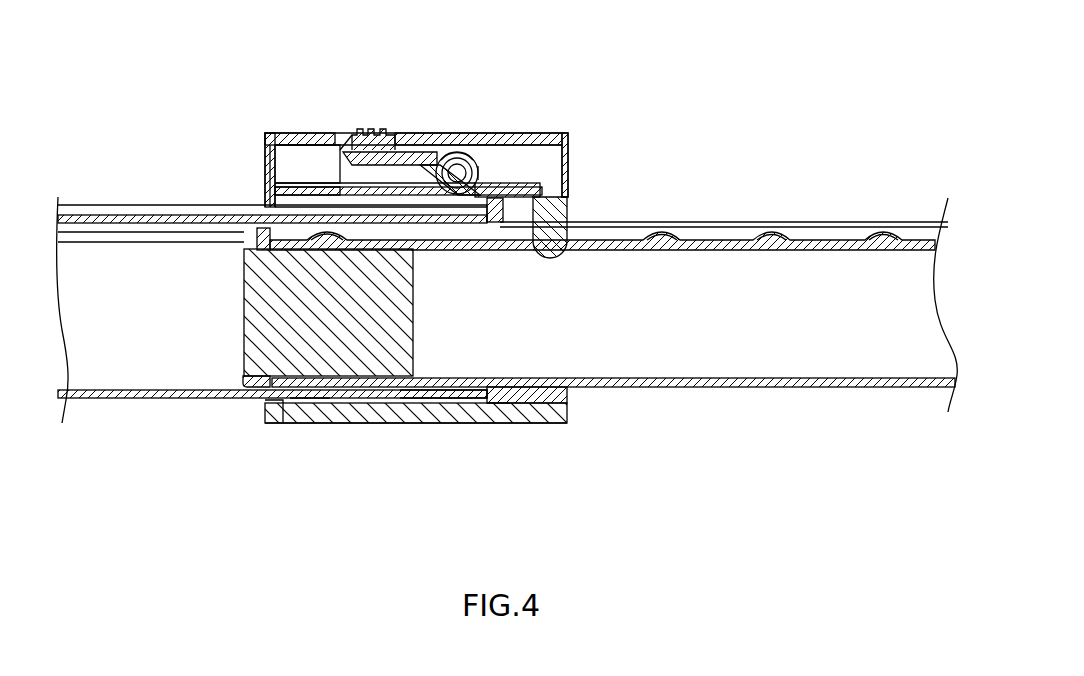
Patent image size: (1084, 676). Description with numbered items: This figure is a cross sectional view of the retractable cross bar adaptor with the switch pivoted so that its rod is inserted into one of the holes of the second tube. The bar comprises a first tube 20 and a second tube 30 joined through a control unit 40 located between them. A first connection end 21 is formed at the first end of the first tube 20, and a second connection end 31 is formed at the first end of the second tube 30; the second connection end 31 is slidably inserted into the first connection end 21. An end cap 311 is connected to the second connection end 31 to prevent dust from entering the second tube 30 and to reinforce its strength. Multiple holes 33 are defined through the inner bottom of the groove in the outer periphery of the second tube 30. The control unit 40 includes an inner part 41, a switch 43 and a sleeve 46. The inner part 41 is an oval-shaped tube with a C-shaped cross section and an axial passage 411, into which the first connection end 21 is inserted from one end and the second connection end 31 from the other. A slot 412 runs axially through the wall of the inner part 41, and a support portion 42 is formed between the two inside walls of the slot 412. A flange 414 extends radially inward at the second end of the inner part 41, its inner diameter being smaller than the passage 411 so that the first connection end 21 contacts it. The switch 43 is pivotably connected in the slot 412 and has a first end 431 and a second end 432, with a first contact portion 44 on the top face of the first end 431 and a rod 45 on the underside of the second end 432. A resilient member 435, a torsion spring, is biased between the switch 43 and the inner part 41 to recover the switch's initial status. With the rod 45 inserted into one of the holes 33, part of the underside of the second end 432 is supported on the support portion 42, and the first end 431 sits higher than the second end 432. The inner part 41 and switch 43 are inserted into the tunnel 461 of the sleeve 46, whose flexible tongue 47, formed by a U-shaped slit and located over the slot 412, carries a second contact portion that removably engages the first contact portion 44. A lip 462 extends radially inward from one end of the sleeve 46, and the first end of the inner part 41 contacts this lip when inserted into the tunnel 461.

The first tube 20 is at (110, 393).
The first connection end 21 is at (453, 403).
The second tube 30 is at (717, 233).
The second connection end 31 is at (340, 380).
The end cap 311 is at (255, 302).
The holes 33 is at (658, 240).
The control unit 40 is at (435, 124).
The inner part 41 is at (424, 400).
The passage 411 is at (307, 393).
The slot 412 is at (305, 170).
The flange 414 is at (568, 413).
The support portion 42 is at (298, 203).
The switch 43 is at (520, 190).
The first end 431 is at (367, 133).
The second end 432 is at (484, 173).
The resilient member 435 is at (453, 157).
The first contact portion 44 is at (358, 133).
The rod 45 is at (552, 230).
The sleeve 46 is at (535, 431).
The tunnel 461 is at (498, 405).
The lip 462 is at (263, 410).
The tongue 47 is at (378, 133).